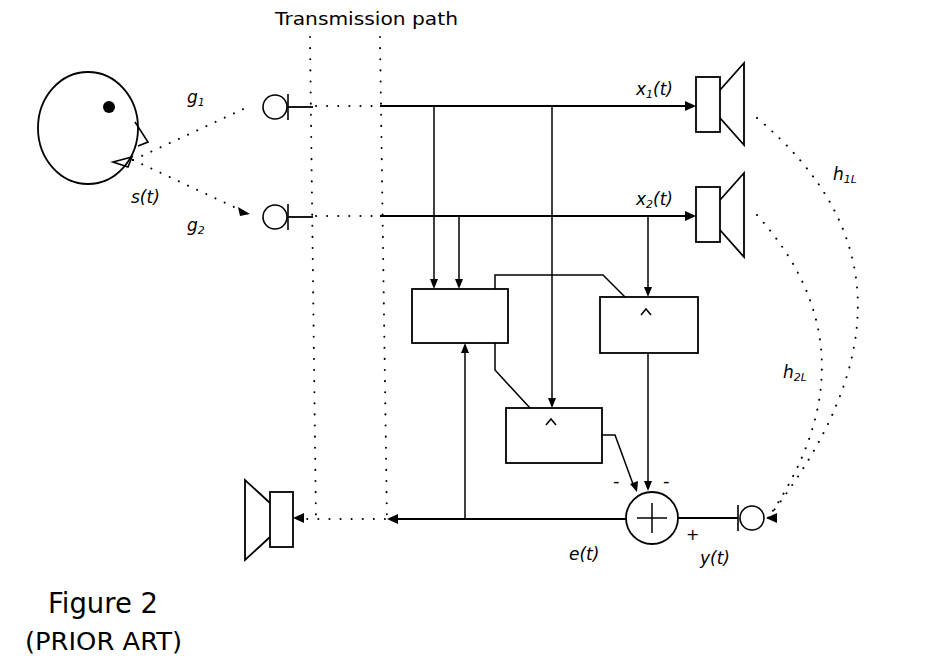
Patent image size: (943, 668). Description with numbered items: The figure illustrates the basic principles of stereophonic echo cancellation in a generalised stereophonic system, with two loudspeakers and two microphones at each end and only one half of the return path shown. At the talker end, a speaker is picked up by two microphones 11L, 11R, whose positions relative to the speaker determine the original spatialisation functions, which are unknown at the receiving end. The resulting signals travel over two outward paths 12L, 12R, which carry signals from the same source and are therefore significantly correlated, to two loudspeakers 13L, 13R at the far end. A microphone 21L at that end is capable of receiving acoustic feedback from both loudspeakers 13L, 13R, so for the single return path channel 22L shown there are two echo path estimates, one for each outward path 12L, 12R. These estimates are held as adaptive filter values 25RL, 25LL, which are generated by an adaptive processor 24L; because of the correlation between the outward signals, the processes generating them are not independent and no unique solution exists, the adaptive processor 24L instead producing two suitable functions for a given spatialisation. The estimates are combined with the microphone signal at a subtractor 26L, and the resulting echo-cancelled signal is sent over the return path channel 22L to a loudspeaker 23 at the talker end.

The left microphone 11L is at (287, 95).
The right microphone 11R is at (287, 233).
The left outward path 12L is at (506, 90).
The right outward path 12R is at (506, 207).
The left loudspeaker 13L is at (720, 95).
The right loudspeaker 13R is at (716, 206).
The microphone 21L is at (723, 502).
The return path channel 22L is at (339, 504).
The loudspeaker 23 is at (267, 505).
The adaptive processor 24L is at (460, 332).
The adaptive filter value 25RL is at (676, 355).
The adaptive filter value 25LL is at (594, 474).
The subtractor 26L is at (652, 532).